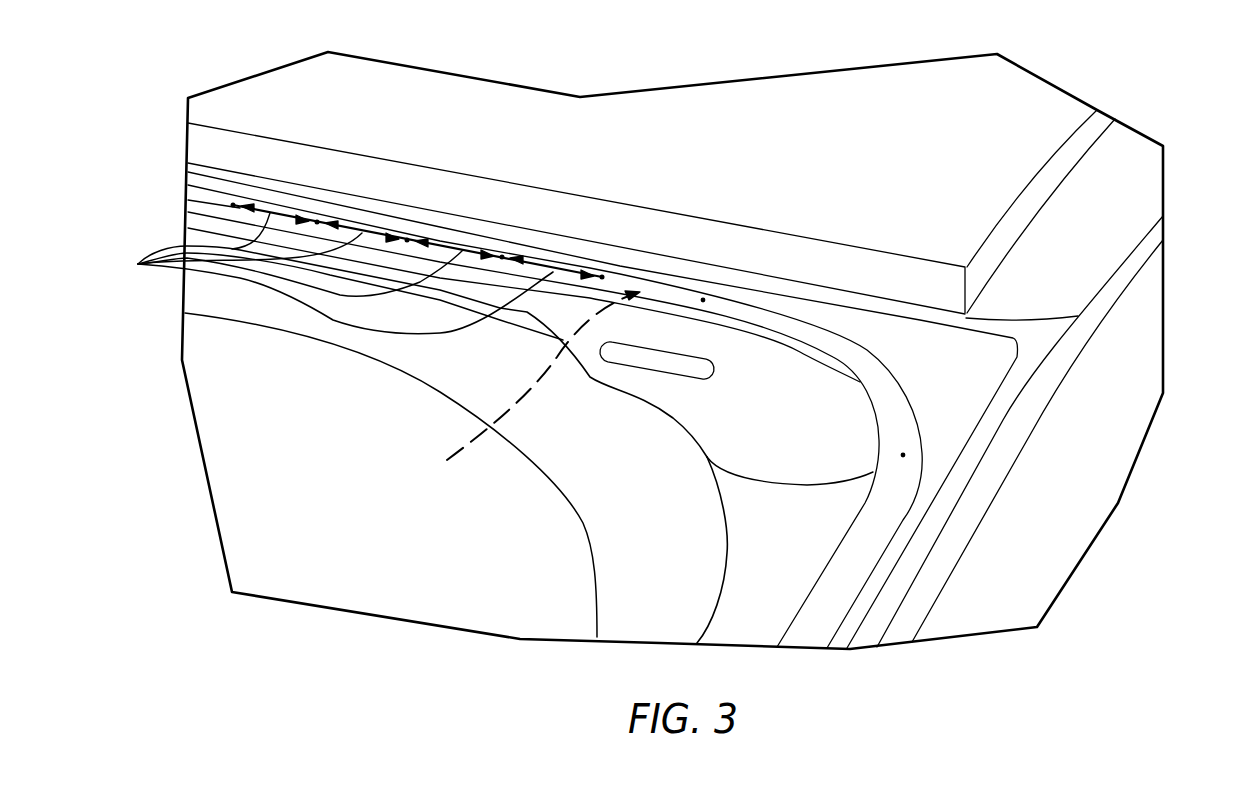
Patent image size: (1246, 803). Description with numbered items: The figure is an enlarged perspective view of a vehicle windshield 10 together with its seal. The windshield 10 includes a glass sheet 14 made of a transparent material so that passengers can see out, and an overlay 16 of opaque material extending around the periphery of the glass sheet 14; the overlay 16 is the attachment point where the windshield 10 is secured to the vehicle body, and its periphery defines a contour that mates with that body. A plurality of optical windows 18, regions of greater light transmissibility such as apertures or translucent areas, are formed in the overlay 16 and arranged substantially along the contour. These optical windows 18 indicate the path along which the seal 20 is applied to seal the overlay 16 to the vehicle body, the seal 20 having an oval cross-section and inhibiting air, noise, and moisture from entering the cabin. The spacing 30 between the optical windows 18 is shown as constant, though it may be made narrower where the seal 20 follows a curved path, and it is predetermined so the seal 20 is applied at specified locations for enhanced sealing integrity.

The windshield 10 is at (767, 297).
The glass sheet 14 is at (340, 553).
The overlay 16 is at (943, 360).
The optical windows 18 is at (882, 377).
The seal 20 is at (526, 390).
The spacing 30 is at (145, 264).